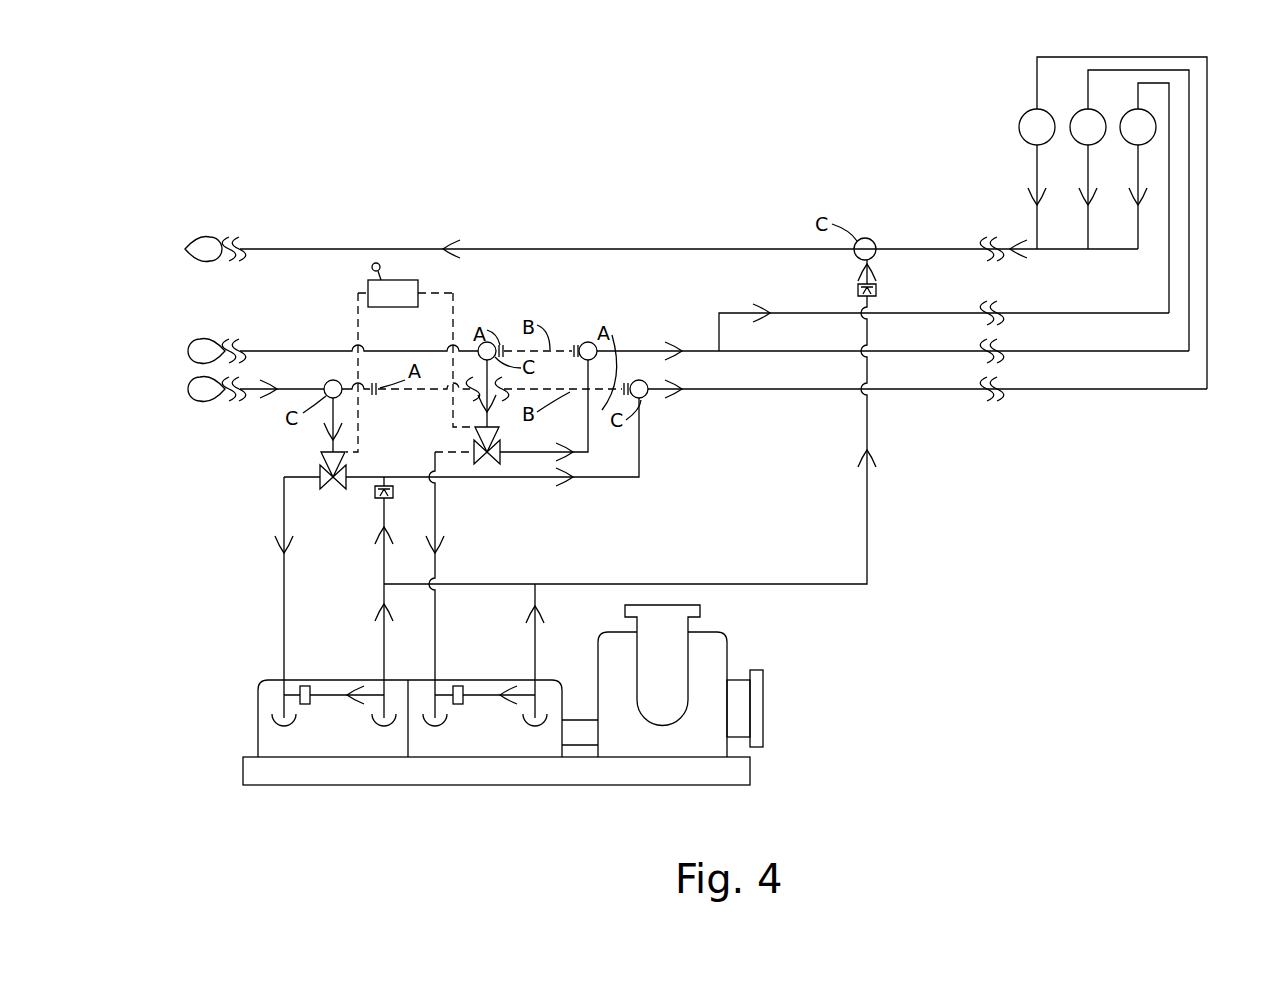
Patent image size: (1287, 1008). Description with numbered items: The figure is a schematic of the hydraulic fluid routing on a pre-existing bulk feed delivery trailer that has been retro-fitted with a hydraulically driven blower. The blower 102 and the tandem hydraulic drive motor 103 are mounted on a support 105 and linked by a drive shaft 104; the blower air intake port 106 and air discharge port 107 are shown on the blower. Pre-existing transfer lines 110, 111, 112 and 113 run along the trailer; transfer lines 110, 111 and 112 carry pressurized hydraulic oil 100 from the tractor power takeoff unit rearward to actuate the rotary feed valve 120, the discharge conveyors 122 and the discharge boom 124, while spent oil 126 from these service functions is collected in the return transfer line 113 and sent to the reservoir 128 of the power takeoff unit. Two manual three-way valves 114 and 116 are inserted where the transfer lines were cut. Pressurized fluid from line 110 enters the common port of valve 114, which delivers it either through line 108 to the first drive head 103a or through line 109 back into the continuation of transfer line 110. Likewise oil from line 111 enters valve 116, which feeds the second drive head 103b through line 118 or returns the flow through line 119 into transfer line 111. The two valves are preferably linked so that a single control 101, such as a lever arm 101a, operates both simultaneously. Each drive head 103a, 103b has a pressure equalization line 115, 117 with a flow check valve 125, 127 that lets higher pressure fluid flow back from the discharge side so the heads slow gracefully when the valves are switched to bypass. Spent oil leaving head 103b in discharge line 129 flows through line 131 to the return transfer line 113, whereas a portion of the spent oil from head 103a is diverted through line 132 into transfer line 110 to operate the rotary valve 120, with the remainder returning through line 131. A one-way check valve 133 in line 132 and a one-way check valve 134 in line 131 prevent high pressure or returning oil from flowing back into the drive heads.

The pressurized hydraulic oil 100 is at (186, 392).
The single control 101 is at (418, 285).
The lever arm 101a is at (371, 266).
The blower 102 is at (728, 640).
The tandem hydraulic drive motor 103 is at (264, 681).
The first drive head 103a is at (258, 737).
The second drive head 103b is at (575, 672).
The drive shaft 104 is at (580, 747).
The support 105 is at (410, 786).
The blower air intake port 106 is at (765, 702).
The air discharge port 107 is at (690, 606).
The line 108 is at (283, 645).
The line 109 is at (505, 478).
The transfer line 110 is at (255, 393).
The transfer line 111 is at (280, 348).
The transfer line 112 is at (750, 308).
The return transfer line 113 is at (272, 246).
The three-way valve 114 is at (323, 468).
The pressure equalization line 115 is at (340, 693).
The three-way valve 116 is at (474, 446).
The pressure equalization line 117 is at (490, 693).
The line 118 is at (460, 502).
The line 119 is at (588, 443).
The rotary feed valve 120 is at (1037, 127).
The discharge conveyors 122 is at (1088, 127).
The discharge boom 124 is at (1138, 127).
The flow check valve 125 is at (302, 685).
The spent oil 126 is at (1138, 232).
The flow check valve 127 is at (458, 685).
The reservoir 128 is at (222, 236).
The drive head discharge line 129 is at (538, 645).
The line 131 is at (462, 583).
The line 132 is at (382, 530).
The one-way flow check valve 133 is at (394, 492).
The one-way flow check valve 134 is at (878, 291).